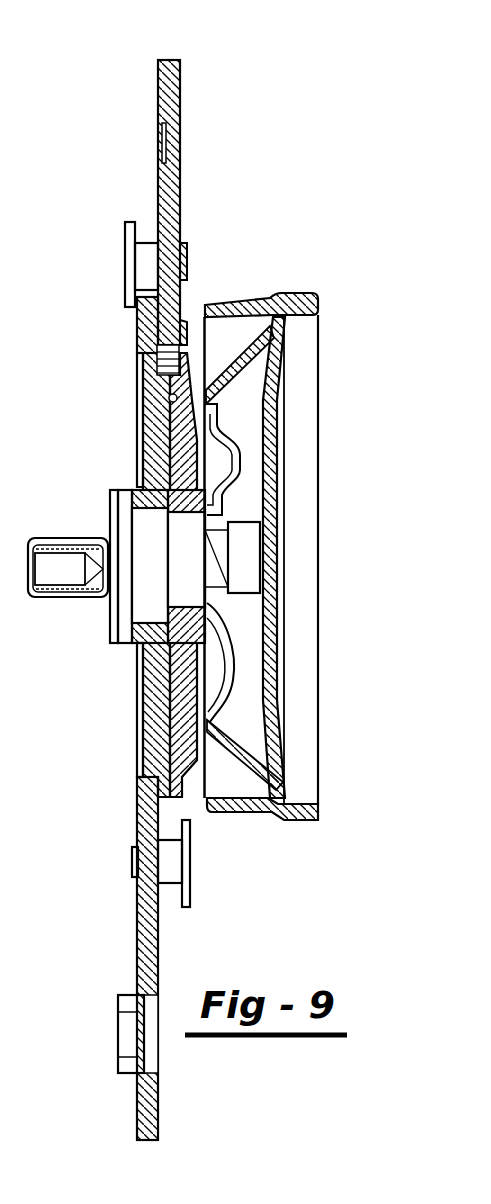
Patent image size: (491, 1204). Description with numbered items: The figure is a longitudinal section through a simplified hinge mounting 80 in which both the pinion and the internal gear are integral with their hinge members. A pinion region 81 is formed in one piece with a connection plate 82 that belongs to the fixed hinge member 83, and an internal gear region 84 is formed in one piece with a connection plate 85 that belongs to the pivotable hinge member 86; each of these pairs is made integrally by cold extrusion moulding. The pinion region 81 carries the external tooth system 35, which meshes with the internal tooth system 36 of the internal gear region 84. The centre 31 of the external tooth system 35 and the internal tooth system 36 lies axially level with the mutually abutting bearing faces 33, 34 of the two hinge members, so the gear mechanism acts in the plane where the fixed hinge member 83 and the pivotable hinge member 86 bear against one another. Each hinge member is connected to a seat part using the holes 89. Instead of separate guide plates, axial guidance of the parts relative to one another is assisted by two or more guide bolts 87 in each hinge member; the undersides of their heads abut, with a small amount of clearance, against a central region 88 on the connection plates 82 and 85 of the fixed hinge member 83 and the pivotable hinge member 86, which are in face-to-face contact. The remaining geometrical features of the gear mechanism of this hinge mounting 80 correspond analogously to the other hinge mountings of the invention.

The centre 31 is at (153, 697).
The bearing face 33 is at (231, 682).
The bearing face 34 is at (162, 490).
The external tooth system 35 is at (163, 368).
The internal tooth system 36 is at (163, 350).
The hinge mounting 80 is at (330, 558).
The pinion region 81 is at (168, 395).
The connection plate 82 is at (148, 330).
The fixed hinge member 83 is at (150, 938).
The internal gear region 84 is at (192, 305).
The connection plate 85 is at (175, 195).
The pivotable hinge member 86 is at (172, 80).
The guide bolt 87 is at (147, 265).
The central region 88 is at (170, 835).
The hole 89 is at (130, 1045).